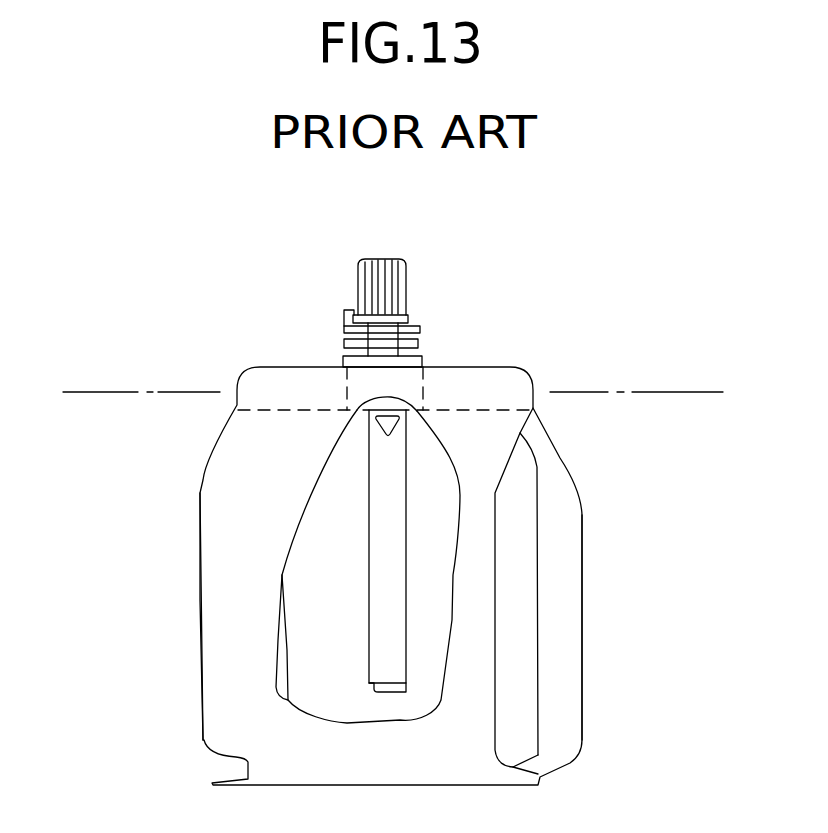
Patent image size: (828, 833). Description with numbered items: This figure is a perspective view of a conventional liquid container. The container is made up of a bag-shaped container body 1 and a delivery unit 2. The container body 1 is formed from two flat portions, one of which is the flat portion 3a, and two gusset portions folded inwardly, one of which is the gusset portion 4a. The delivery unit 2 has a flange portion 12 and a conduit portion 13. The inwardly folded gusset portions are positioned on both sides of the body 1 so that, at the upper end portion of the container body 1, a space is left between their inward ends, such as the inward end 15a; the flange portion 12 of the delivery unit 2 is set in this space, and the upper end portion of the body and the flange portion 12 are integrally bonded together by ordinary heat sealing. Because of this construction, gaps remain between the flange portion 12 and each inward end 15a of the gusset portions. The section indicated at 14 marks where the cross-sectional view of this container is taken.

The container body 1 is at (257, 347).
The delivery unit 2 is at (333, 291).
The flat portion 3a is at (228, 582).
The gusset portion 4a is at (568, 705).
The flange portion 12 is at (417, 385).
The conduit portion 13 is at (393, 475).
The section line 14 is at (77, 382).
The inward end 15a is at (538, 587).